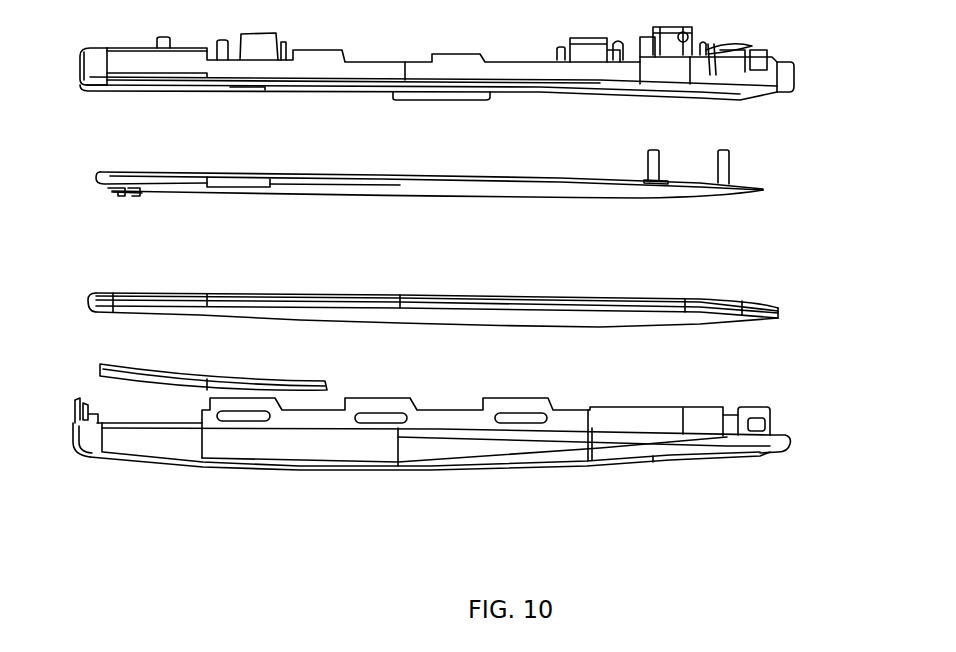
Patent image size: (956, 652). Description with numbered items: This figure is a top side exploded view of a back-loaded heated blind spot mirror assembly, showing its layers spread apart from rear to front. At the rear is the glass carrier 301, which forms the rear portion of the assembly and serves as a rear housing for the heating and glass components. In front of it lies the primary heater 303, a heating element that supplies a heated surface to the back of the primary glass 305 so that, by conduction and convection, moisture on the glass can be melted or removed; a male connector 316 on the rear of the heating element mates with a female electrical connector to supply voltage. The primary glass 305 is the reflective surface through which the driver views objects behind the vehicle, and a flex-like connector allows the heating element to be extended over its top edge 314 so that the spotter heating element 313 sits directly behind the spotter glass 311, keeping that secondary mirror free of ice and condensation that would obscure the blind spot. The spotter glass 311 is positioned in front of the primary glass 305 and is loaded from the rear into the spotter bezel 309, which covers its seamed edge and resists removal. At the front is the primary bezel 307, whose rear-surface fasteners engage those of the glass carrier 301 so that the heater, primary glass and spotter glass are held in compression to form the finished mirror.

The glass carrier 301 is at (495, 73).
The primary heater 303 is at (500, 173).
The male connector 316 is at (728, 178).
The spotter heating element 313 is at (123, 197).
The top edge 314 is at (312, 296).
The primary glass 305 is at (593, 303).
The spotter glass 311 is at (100, 366).
The spotter bezel 309 is at (73, 418).
The primary bezel 307 is at (790, 445).